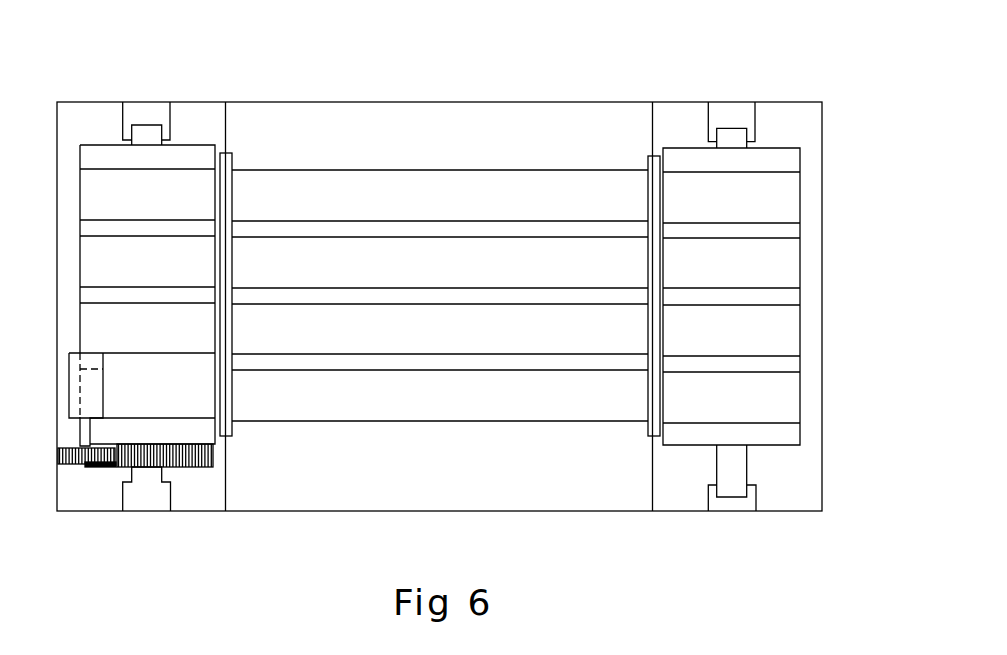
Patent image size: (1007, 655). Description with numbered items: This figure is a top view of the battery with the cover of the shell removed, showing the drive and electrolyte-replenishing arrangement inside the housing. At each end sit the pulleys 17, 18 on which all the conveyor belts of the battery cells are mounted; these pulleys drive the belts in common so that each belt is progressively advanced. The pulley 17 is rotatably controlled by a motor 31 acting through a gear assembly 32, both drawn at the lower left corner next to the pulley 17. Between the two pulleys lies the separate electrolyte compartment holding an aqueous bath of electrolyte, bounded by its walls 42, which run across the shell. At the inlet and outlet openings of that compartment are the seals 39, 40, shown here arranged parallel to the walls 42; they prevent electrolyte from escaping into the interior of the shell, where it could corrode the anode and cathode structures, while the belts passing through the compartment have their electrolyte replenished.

The pulley 17 is at (100, 153).
The pulley (roller) 18 is at (778, 160).
The motor 31 is at (85, 389).
The gear assembly 32 is at (128, 465).
The seal 39 is at (644, 151).
The seal 40 is at (232, 155).
The walls of the electrolyte compartment 42 is at (227, 465).